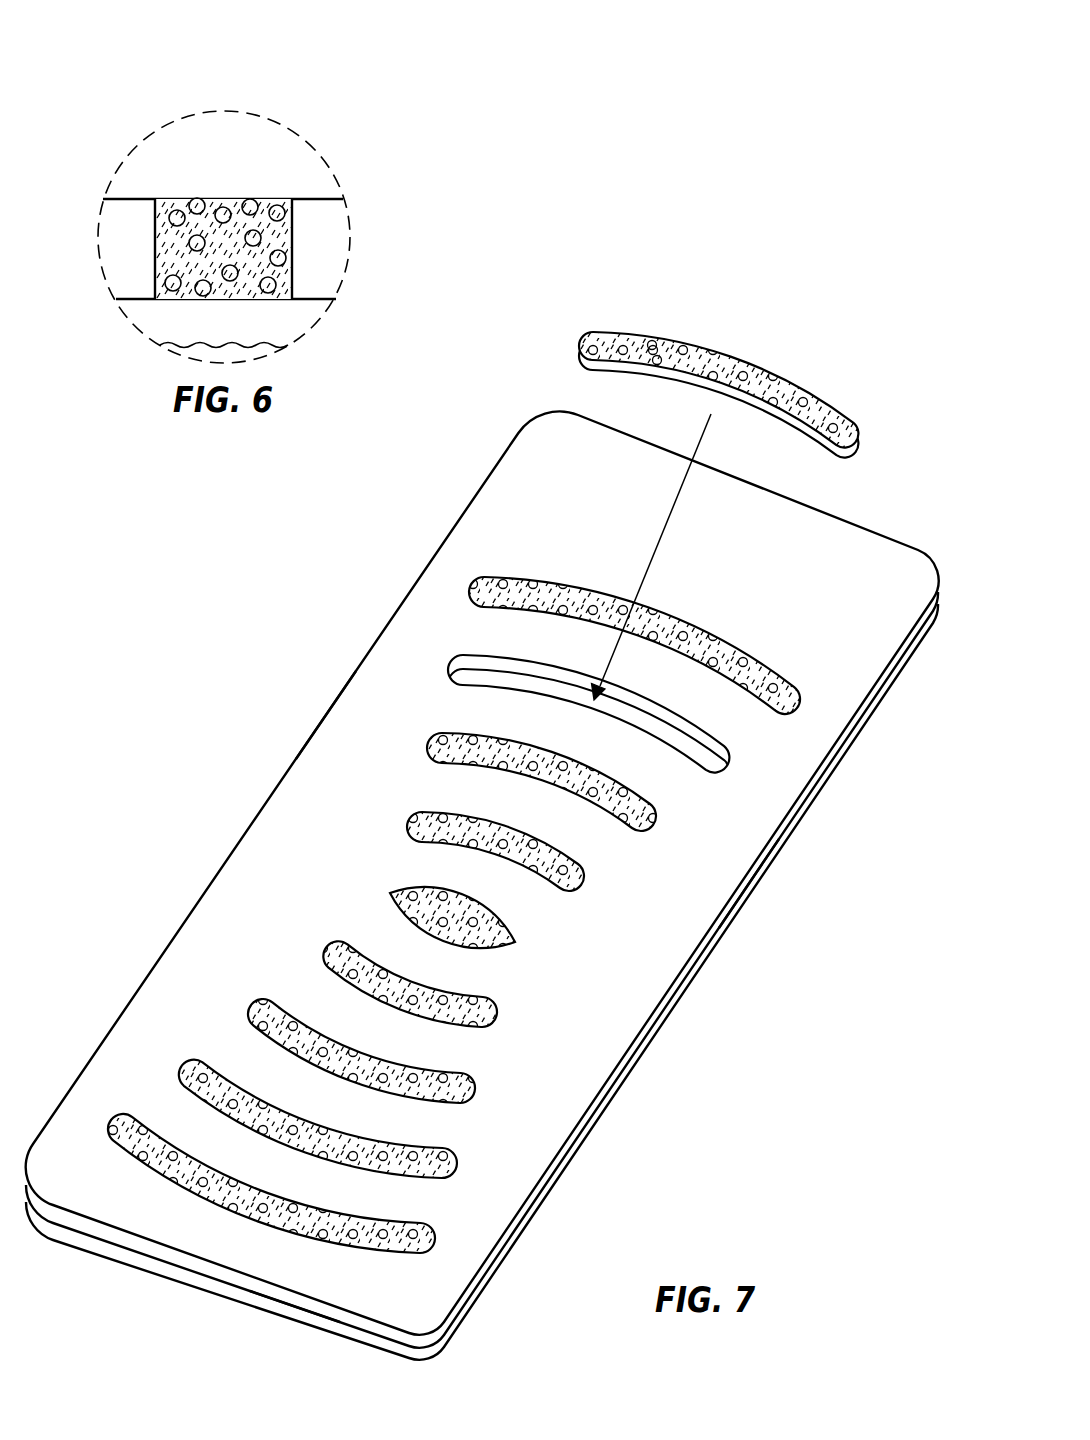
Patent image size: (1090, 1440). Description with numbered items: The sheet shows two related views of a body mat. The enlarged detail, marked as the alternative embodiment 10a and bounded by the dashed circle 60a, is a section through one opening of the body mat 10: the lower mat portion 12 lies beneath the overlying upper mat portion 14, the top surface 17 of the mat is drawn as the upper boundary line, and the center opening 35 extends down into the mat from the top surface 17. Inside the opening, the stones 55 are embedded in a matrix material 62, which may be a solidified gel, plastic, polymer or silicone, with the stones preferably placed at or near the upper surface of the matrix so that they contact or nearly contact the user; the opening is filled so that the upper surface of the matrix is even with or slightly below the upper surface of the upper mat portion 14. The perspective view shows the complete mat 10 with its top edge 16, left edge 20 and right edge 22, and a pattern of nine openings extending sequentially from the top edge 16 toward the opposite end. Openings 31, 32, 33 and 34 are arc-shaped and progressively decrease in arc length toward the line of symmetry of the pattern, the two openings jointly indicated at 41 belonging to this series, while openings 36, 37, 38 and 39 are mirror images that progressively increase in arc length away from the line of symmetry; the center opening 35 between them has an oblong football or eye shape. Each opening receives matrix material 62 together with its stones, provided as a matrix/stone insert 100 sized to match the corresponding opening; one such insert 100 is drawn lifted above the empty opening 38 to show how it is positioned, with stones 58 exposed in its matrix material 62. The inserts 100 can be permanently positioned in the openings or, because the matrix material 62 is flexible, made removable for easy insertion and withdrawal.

In FIG. 6, the cushion device 10a is at (133, 92).
In FIG. 6, the detail view region 60a is at (222, 112).
In FIG. 6, the stones 55 is at (197, 200).
In FIG. 6, the center opening 35 is at (230, 163).
In FIG. 7, the center opening 35 is at (487, 947).
In FIG. 6, the matrix material 62 is at (267, 202).
In FIG. 7, the matrix material 62 is at (735, 358).
In FIG. 6, the top surface 17 is at (135, 198).
In FIG. 7, the top surface 17 is at (519, 522).
In FIG. 6, the upper mat portion 14 is at (105, 257).
In FIG. 7, the upper mat portion 14 is at (619, 1075).
In FIG. 6, the body mat 10 is at (208, 350).
In FIG. 6, the lower mat portion 12 is at (216, 332).
In FIG. 7, the lower mat portion 12 is at (573, 1157).
In FIG. 7, the matrix/stone insert 100 is at (640, 295).
In FIG. 7, the stones 58 is at (660, 356).
In FIG. 7, the opening 39 is at (795, 700).
In FIG. 7, the opening 38 is at (726, 762).
In FIG. 7, the opening 37 is at (650, 810).
In FIG. 7, the opening 36 is at (578, 862).
In FIG. 7, the arc-shaped opening 34 is at (460, 1028).
In FIG. 7, the arc-shaped opening 33 is at (437, 1105).
In FIG. 7, the arc-shaped opening 32 is at (403, 1180).
In FIG. 7, the arc-shaped opening 31 is at (372, 1257).
In FIG. 7, the insert pair 41 is at (323, 940).
In FIG. 7, the right edge 22 is at (326, 712).
In FIG. 7, the left edge 20 is at (760, 869).
In FIG. 7, the top edge 16 is at (293, 1307).